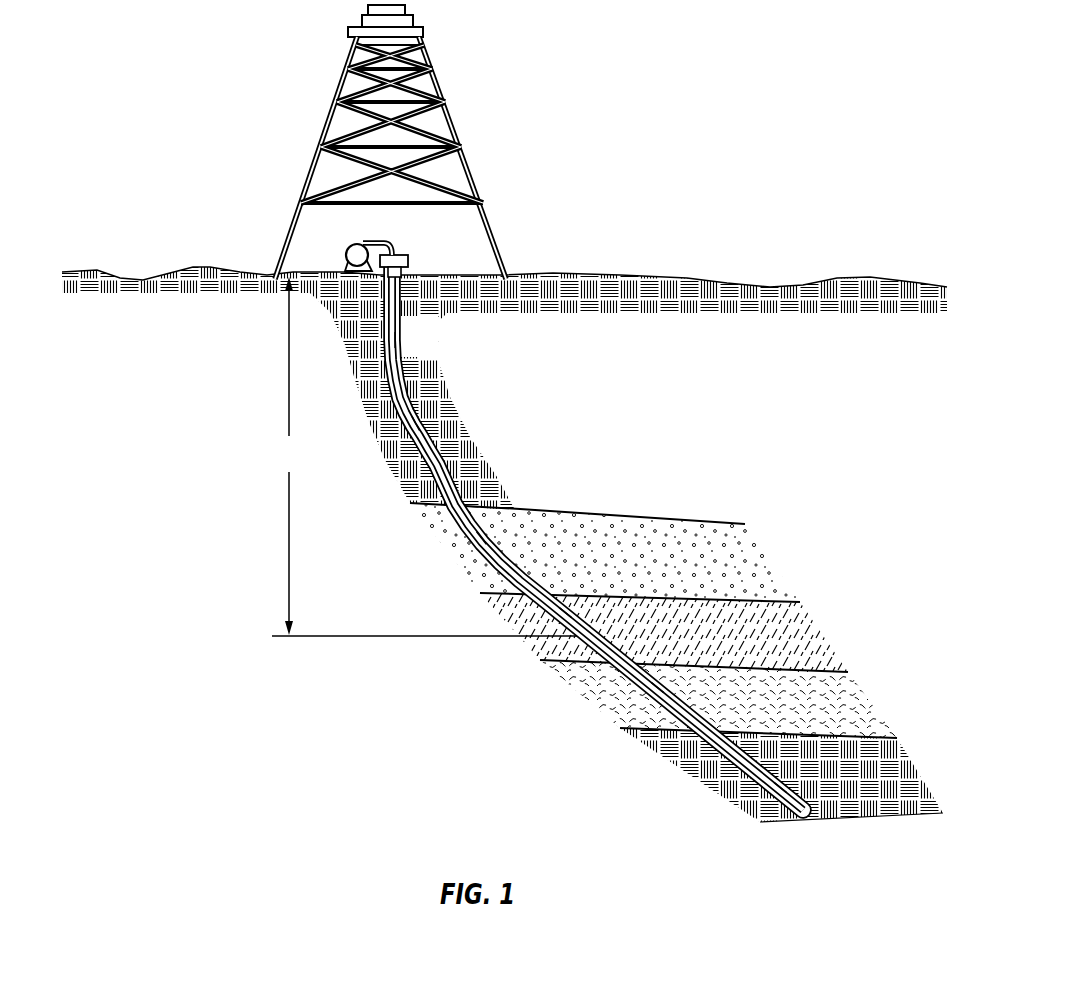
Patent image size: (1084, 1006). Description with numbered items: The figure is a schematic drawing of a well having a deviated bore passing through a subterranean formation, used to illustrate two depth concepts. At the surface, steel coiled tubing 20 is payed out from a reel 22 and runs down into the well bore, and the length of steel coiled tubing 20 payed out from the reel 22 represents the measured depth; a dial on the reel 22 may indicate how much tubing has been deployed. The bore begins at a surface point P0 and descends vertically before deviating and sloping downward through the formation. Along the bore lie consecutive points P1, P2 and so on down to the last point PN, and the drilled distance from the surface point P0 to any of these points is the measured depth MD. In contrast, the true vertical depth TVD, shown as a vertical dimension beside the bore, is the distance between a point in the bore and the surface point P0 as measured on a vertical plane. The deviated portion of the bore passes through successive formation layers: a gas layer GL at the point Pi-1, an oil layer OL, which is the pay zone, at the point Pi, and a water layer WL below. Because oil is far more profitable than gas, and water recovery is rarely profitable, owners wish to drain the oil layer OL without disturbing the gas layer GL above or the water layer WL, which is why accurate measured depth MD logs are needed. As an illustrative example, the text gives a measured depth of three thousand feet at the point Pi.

The steel coiled tubing 20 is at (384, 240).
The reel 22 is at (348, 242).
The surface point P0 is at (408, 256).
The first point along well bore P1 is at (389, 340).
The second point along well bore P2 is at (435, 427).
The gas layer point Pi-1 is at (522, 539).
The oil layer point (pay zone) Pi is at (602, 621).
The last point along well bore PN is at (810, 785).
The measured depth MD is at (421, 453).
The true vertical depth TVD is at (428, 456).
The gas layer GL is at (605, 552).
The oil layer OL is at (664, 632).
The water layer WL is at (718, 699).